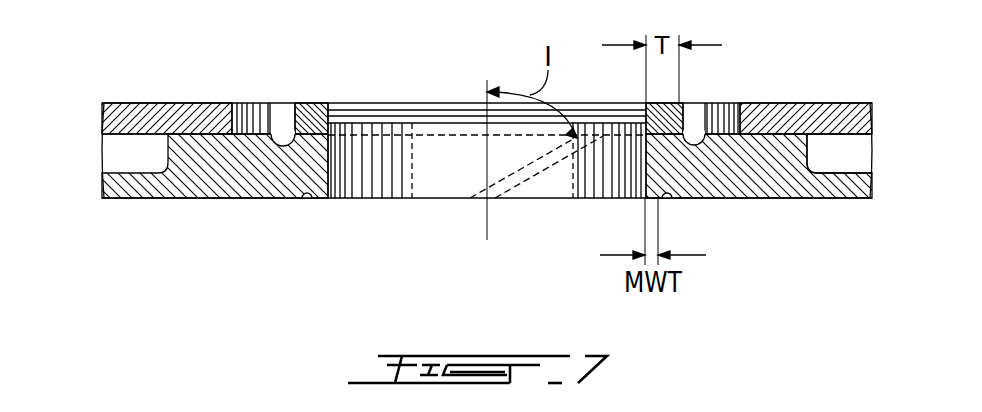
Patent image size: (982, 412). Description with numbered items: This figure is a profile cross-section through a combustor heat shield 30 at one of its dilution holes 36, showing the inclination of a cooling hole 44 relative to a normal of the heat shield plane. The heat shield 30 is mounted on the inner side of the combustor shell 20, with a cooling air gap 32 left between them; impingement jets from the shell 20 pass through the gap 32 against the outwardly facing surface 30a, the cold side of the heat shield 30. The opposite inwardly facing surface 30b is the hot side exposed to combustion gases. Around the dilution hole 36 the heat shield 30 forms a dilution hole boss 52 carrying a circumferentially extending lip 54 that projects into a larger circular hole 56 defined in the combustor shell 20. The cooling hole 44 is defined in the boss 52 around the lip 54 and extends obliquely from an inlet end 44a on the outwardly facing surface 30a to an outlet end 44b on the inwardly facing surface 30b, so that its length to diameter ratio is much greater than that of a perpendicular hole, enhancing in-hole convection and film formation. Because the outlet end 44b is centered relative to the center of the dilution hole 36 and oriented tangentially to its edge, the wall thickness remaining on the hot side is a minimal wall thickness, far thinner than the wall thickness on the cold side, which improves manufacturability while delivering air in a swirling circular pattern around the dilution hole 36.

The combustor shell 20 is at (120, 112).
The heat shield 30 is at (127, 187).
The outwardly facing surface 30a is at (727, 120).
The inwardly facing surface 30b is at (848, 199).
The cooling air gap 32 is at (843, 153).
The dilution hole 36 is at (325, 163).
The cooling hole 44 is at (540, 168).
The inlet end 44a is at (283, 142).
The outlet end 44b is at (477, 198).
The dilution hole boss 52 is at (772, 168).
The lip 54 is at (306, 118).
The circular hole 56 is at (250, 118).